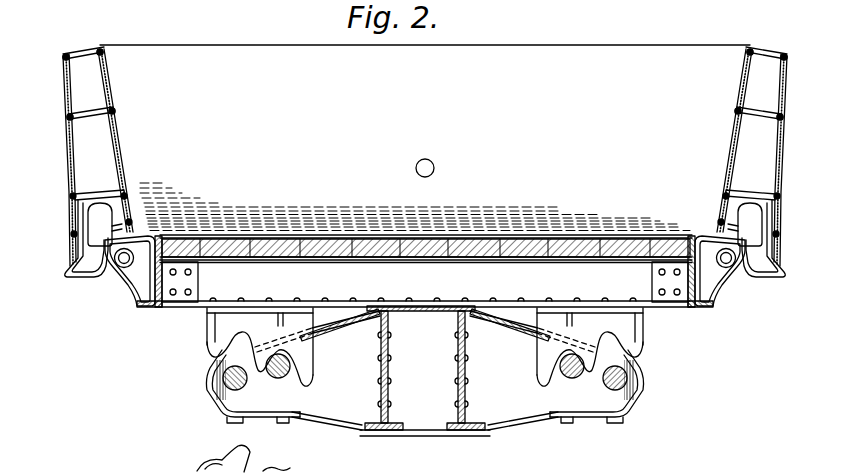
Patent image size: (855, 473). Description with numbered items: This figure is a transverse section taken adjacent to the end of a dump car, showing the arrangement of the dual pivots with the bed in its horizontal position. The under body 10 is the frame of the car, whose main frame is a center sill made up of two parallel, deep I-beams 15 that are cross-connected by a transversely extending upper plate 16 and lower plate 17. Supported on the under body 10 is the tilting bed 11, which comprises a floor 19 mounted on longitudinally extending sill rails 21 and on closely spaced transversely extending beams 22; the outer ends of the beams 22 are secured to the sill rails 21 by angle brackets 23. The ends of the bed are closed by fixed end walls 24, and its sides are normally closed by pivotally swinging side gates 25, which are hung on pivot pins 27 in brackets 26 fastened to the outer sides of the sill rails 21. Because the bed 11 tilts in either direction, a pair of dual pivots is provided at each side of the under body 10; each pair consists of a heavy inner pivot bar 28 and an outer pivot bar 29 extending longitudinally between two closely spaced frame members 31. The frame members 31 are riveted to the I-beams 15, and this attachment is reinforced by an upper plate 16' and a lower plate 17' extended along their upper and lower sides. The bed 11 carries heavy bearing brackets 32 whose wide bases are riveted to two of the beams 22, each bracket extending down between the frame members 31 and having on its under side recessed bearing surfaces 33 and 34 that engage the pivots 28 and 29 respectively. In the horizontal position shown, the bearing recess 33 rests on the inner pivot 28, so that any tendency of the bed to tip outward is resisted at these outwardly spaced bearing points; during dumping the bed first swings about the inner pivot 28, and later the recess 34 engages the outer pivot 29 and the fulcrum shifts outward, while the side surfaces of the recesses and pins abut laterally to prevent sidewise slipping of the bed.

The under body 10 is at (364, 432).
The tilting bed 11 is at (199, 38).
The I-beams 15 is at (458, 362).
The upper plate 16 is at (421, 334).
The upper plate 16' is at (425, 309).
The lower plate 17 is at (425, 415).
The lower plate 17' is at (425, 443).
The floor 19 is at (505, 234).
The sill rails 21 is at (160, 304).
The beams 22 is at (196, 311).
The angle brackets 23 is at (168, 305).
The end walls 24 is at (708, 43).
The side gates 25 is at (68, 176).
The brackets 26 is at (133, 277).
The pivot pins 27 is at (112, 264).
The inner pivot bar 28 is at (286, 378).
The outer pivot bar 29 is at (215, 396).
The frame members 31 is at (310, 418).
The bearing brackets 32 is at (218, 331).
The bearing recess 33 is at (283, 353).
The bearing recess 34 is at (218, 333).